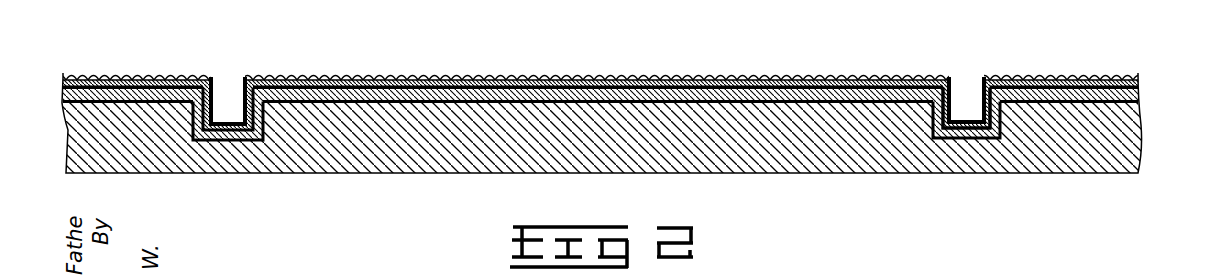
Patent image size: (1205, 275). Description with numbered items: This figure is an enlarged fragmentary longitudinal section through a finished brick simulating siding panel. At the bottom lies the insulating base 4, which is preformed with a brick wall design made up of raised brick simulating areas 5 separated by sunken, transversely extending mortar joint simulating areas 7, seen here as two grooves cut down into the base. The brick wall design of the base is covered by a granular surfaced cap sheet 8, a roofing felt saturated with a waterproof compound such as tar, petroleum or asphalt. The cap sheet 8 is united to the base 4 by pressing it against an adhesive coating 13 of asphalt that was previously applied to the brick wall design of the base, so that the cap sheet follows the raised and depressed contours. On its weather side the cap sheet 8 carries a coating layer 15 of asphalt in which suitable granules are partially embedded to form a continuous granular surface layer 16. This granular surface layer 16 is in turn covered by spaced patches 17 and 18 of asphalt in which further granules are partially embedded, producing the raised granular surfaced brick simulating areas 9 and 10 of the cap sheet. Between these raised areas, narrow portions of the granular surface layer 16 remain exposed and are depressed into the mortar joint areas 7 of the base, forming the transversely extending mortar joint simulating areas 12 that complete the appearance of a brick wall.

The insulating base 4 is at (400, 173).
The raised brick simulating areas 5 is at (120, 115).
The transversely extending mortar joint simulating areas 7 is at (235, 138).
The granular surfaced cap sheet 8 is at (390, 78).
The brick simulating areas 9 is at (147, 76).
The brick simulating areas 10 is at (608, 75).
The transversely extending mortar joint simulating areas 12 is at (228, 100).
The adhesive coating 13 is at (95, 107).
The coating layer 15 is at (505, 87).
The granular surface layer 16 is at (67, 88).
The patches of asphalt 17 is at (67, 80).
The patches of asphalt 18 is at (948, 68).